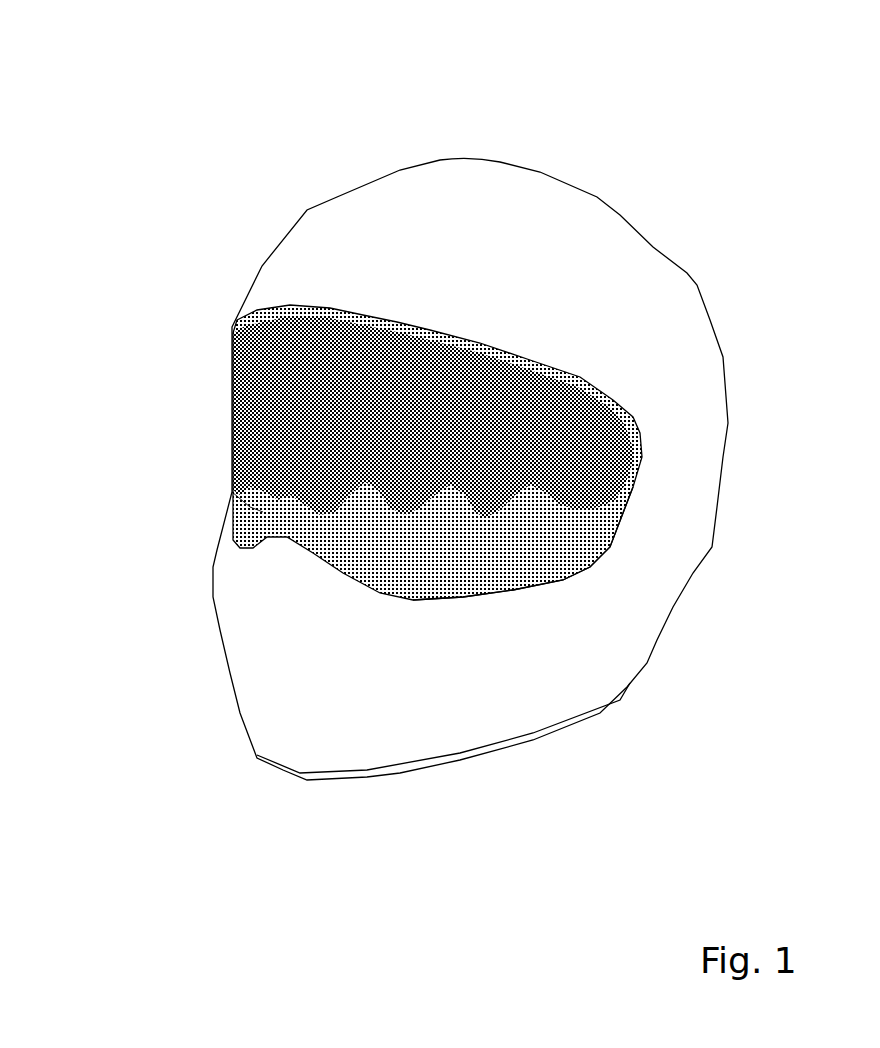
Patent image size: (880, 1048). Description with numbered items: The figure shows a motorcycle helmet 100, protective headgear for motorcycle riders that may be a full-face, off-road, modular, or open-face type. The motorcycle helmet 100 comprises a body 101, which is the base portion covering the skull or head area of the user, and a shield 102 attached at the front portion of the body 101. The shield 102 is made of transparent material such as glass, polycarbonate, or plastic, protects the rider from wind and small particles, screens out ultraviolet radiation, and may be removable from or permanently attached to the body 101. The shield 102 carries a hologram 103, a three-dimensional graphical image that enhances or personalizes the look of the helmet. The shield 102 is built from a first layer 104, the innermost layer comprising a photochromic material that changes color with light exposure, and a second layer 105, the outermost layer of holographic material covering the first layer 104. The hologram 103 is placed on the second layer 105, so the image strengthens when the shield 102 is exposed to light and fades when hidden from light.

The motorcycle helmet 100 is at (613, 152).
The body 101 is at (417, 303).
The shield 102 is at (232, 425).
The hologram 103 is at (230, 490).
The first layer 104 is at (623, 413).
The second layer 105 is at (622, 533).